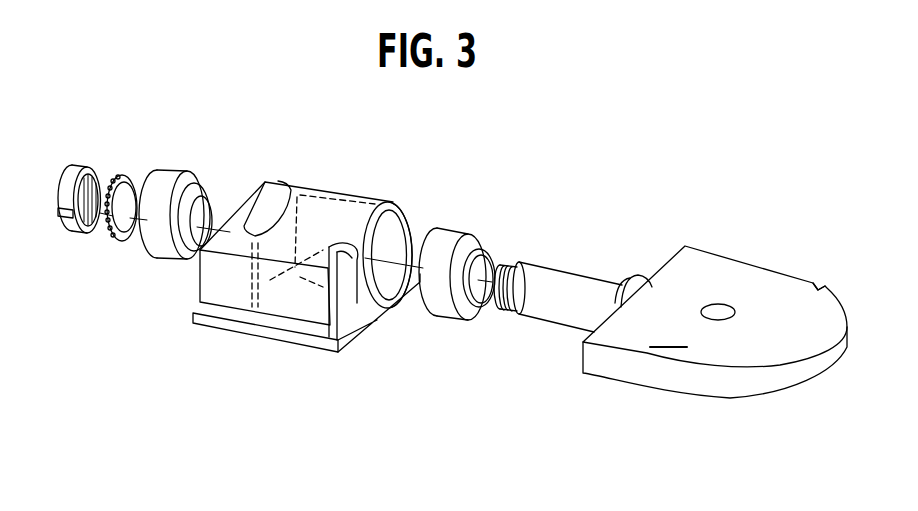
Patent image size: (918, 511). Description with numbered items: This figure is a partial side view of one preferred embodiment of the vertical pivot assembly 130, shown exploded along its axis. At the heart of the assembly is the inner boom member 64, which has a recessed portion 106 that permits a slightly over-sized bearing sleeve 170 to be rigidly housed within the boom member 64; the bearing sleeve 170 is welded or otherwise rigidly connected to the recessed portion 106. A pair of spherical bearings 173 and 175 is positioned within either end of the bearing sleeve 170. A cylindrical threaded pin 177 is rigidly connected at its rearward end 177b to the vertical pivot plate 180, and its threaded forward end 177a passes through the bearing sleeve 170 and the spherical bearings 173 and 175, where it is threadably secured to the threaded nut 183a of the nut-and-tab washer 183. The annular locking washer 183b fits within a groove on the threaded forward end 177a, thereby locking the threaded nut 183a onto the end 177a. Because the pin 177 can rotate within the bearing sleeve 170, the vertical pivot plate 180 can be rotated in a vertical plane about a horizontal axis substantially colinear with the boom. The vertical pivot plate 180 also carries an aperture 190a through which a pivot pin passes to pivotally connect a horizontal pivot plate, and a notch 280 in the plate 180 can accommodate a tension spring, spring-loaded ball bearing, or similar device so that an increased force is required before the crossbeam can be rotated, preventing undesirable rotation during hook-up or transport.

The inner boom member 64 is at (278, 346).
The recessed portion 106 is at (272, 224).
The vertical pivot assembly 130 is at (731, 404).
The bearing sleeve 170 is at (346, 200).
The spherical bearing 173 is at (157, 261).
The spherical bearing 175 is at (453, 241).
The cylindrical threaded pin 177 is at (567, 268).
The threaded forward end 177a is at (500, 309).
The rearward end 177b is at (638, 280).
The vertical pivot plate 180 is at (715, 306).
The nut-and-tab washer 183 is at (158, 165).
The threaded nut 183a is at (65, 234).
The annular locking washer 183b is at (112, 241).
The aperture 190a is at (720, 310).
The notch 280 is at (822, 290).